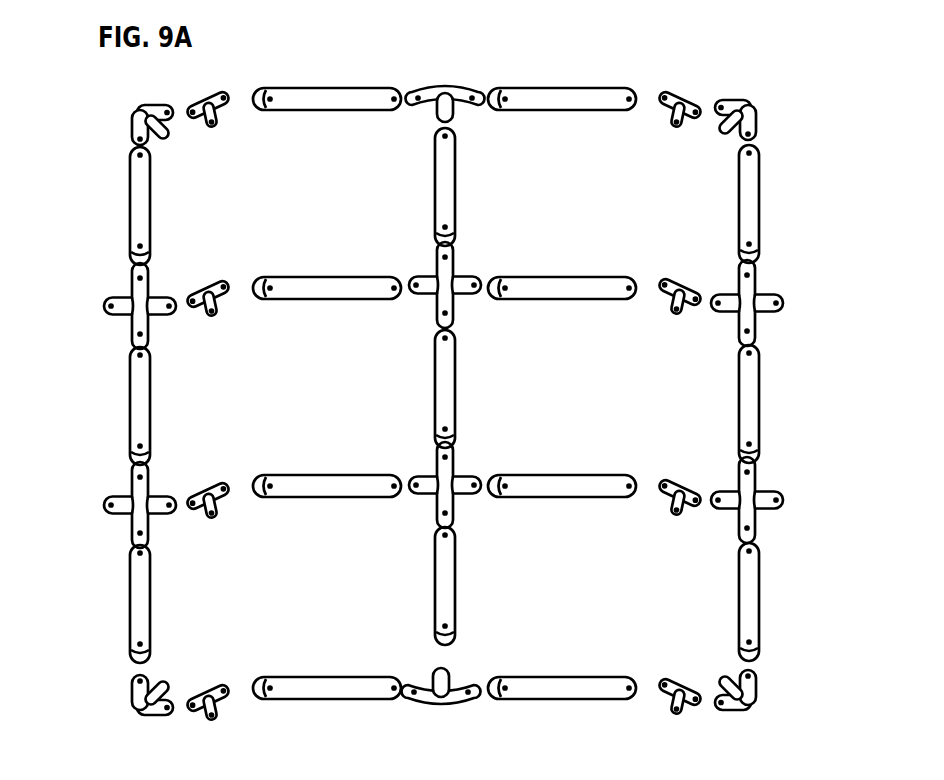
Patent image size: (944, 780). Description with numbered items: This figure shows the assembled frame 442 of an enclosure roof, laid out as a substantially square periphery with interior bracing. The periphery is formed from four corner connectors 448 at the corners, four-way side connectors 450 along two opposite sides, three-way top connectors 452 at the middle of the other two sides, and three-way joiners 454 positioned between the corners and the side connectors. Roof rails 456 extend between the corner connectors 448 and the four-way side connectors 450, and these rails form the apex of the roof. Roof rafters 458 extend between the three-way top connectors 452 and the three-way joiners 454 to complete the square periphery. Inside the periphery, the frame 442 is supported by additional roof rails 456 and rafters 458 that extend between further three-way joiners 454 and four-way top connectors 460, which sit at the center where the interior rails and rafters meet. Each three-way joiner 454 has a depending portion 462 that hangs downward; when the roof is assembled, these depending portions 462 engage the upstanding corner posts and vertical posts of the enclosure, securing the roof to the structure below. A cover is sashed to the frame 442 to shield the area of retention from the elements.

The frame 442 is at (623, 81).
The corner connector 448 is at (142, 119).
The four-way side connector 450 is at (118, 312).
The three-way top connector 452 is at (467, 90).
The three-way joiner 454 is at (222, 284).
The roof rail 456 is at (140, 206).
The roof rafter 458 is at (322, 99).
The four-way top connector 460 is at (448, 270).
The depending portion 462 is at (207, 126).